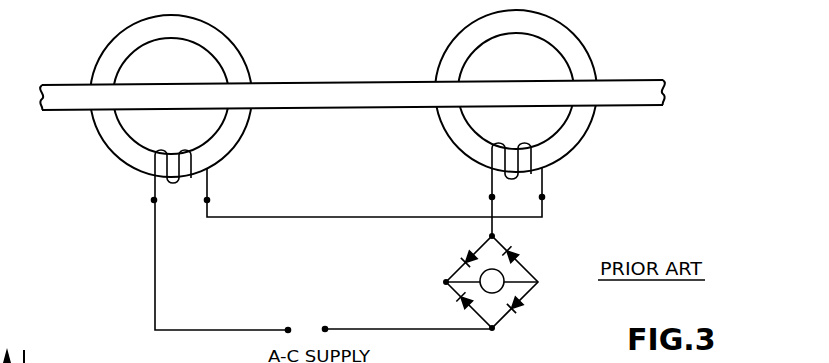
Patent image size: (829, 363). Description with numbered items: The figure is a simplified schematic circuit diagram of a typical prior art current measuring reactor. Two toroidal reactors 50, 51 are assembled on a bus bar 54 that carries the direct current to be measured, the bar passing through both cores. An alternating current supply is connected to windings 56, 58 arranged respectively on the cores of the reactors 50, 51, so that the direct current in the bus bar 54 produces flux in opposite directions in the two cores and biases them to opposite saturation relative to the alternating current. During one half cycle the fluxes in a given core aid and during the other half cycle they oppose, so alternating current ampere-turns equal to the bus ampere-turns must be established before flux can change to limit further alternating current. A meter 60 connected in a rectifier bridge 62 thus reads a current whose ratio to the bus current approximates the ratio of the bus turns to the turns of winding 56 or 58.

The toroidal reactor 50 is at (238, 45).
The toroidal reactor 51 is at (611, 21).
The bus bar 54 is at (359, 83).
The winding 56 is at (180, 152).
The winding 58 is at (521, 146).
The meter 60 is at (502, 274).
The rectifier bridge 62 is at (438, 285).